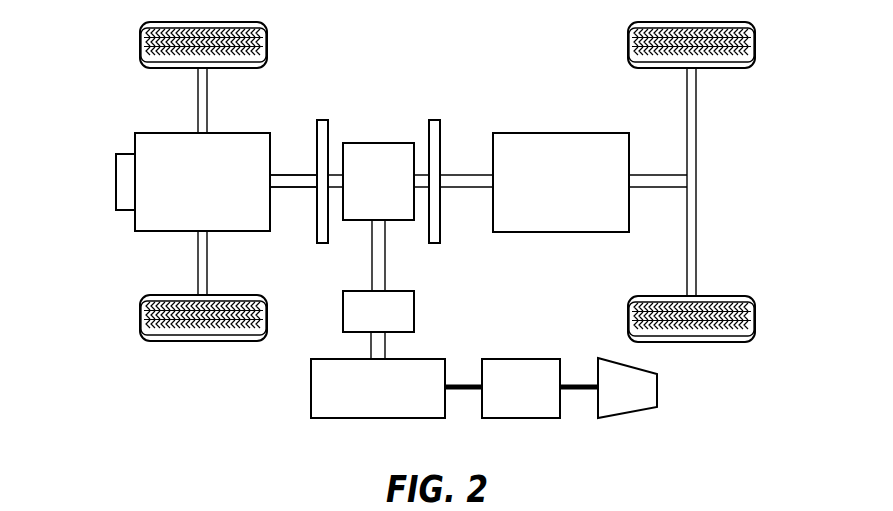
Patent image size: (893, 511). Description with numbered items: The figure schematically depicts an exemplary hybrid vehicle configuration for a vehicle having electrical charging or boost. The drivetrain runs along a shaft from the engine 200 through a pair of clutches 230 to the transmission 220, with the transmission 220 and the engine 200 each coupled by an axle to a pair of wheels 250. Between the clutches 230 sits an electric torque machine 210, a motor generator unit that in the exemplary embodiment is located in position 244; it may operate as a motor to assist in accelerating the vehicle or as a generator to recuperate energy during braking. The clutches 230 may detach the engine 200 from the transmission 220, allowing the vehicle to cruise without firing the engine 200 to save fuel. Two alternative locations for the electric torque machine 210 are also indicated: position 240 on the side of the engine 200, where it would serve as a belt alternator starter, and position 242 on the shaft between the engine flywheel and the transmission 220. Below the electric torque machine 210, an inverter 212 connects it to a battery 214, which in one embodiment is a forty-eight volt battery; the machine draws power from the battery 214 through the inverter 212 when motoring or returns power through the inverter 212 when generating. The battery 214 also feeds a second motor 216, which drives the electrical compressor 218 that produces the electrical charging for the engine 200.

The engine 200 is at (202, 182).
The electric torque machine 210 is at (378, 181).
The inverter 212 is at (378, 311).
The battery 214 is at (378, 388).
The second motor 216 is at (521, 388).
The electrical compressor 218 is at (627, 388).
The transmission 220 is at (561, 182).
The clutches 230 is at (425, 118).
The position 240 is at (114, 189).
The position 242 is at (302, 190).
The position 244 is at (369, 221).
The wheels 250 is at (140, 46).